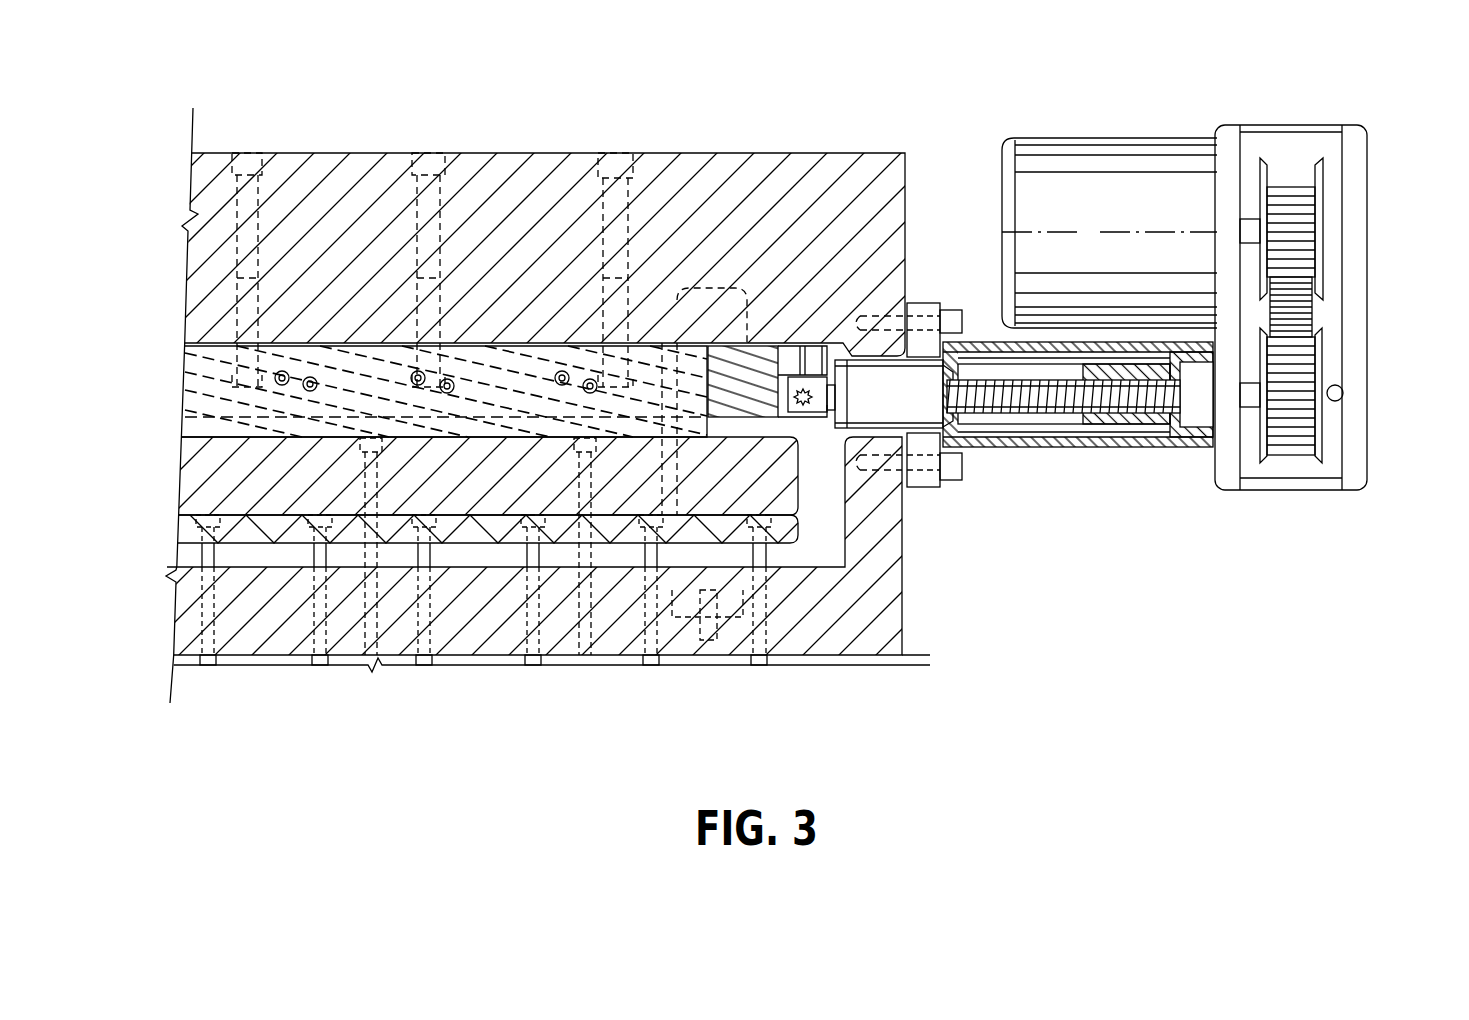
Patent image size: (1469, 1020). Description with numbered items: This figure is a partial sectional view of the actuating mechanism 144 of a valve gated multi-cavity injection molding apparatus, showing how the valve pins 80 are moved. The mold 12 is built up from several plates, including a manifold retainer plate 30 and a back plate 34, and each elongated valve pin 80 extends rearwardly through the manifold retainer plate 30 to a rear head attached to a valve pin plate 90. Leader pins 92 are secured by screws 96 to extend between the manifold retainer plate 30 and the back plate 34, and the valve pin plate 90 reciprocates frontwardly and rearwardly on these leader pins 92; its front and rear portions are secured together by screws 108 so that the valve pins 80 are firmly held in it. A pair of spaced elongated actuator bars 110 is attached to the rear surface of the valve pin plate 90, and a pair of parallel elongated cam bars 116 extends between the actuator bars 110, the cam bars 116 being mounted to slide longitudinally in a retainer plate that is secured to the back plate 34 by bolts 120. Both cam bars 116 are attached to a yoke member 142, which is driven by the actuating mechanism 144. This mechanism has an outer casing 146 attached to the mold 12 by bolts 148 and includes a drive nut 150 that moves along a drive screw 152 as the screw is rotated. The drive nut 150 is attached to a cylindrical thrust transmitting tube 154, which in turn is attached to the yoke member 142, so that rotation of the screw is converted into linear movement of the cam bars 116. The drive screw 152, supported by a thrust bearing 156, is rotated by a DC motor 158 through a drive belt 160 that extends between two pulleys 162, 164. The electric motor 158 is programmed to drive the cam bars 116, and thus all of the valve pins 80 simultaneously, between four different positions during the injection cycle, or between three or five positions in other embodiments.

The mold 12 is at (734, 414).
The manifold retainer plate 30 is at (472, 635).
The back plate 34 is at (493, 175).
The valve pin 80 is at (210, 630).
The valve pin plate 90 is at (193, 472).
The leader pin 92 is at (707, 290).
The screw 96 is at (712, 640).
The screw 108 is at (588, 545).
The actuator bar 110 is at (193, 424).
The cam bar 116 is at (760, 363).
The bolt 120 is at (605, 178).
The yoke member 142 is at (817, 353).
The actuating mechanism 144 is at (1339, 307).
The outer casing 146 is at (1062, 448).
The bolt 148 is at (950, 470).
The drive nut 150 is at (1155, 420).
The drive screw 152 is at (1065, 400).
The thrust transmitting tube 154 is at (940, 405).
The thrust bearing 156 is at (1195, 410).
The DC motor 158 is at (1075, 165).
The drive belt 160 is at (1295, 315).
The pulley 162 is at (1300, 223).
The pulley 164 is at (1295, 410).